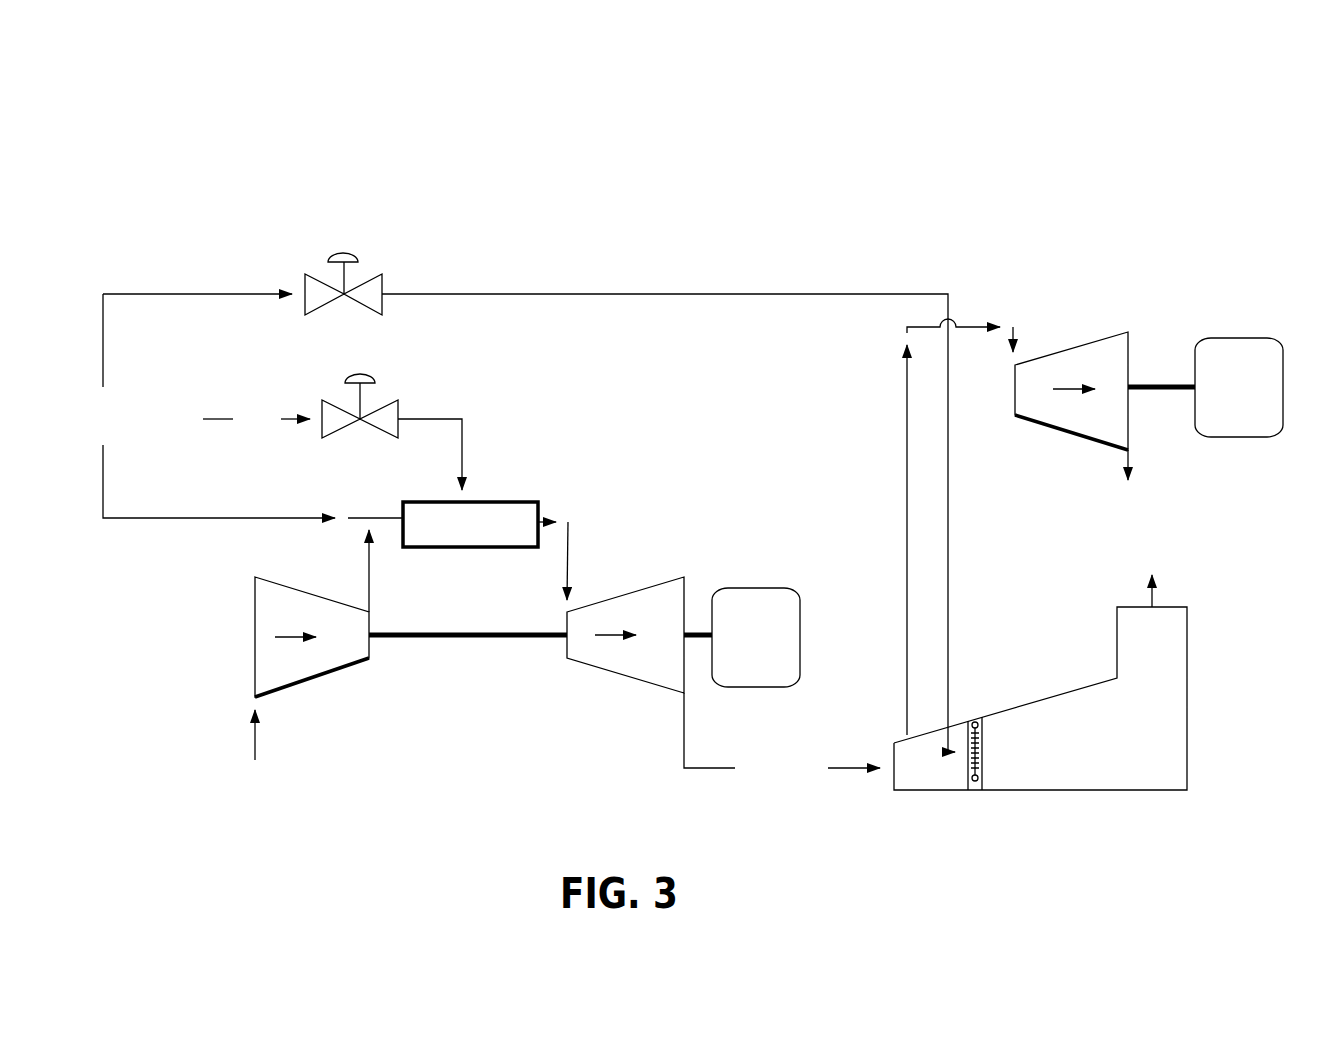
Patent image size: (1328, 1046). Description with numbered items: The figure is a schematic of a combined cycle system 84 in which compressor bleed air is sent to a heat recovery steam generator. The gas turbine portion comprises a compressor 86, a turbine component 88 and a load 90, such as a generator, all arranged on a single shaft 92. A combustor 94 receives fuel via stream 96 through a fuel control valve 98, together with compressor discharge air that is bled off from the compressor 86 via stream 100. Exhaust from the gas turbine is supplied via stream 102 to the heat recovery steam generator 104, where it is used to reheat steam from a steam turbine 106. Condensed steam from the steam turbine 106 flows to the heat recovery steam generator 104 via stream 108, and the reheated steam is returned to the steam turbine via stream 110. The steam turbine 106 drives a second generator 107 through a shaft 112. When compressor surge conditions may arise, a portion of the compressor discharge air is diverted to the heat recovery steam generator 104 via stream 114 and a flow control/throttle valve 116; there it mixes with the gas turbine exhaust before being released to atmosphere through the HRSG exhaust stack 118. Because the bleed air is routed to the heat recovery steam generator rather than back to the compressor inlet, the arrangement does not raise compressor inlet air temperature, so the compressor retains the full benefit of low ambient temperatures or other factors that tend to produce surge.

The combined cycle system 84 is at (1280, 178).
The compressor 86 is at (302, 683).
The turbine component 88 is at (613, 662).
The load 90 is at (758, 597).
The single shaft 92 is at (465, 635).
The combustor 94 is at (497, 502).
The stream 96 is at (440, 418).
The fuel control valve 98 is at (320, 412).
The stream 100 is at (369, 573).
The stream 102 is at (684, 748).
The heat recovery steam generator 104 is at (872, 816).
The steam turbine 106 is at (1110, 355).
The second generator 107 is at (1242, 345).
The stream 108 is at (1128, 452).
The stream 110 is at (903, 500).
The shaft 112 is at (1137, 380).
The stream 114 is at (575, 294).
The flow control/throttle valve 116 is at (388, 290).
The HRSG exhaust stack 118 is at (1187, 712).